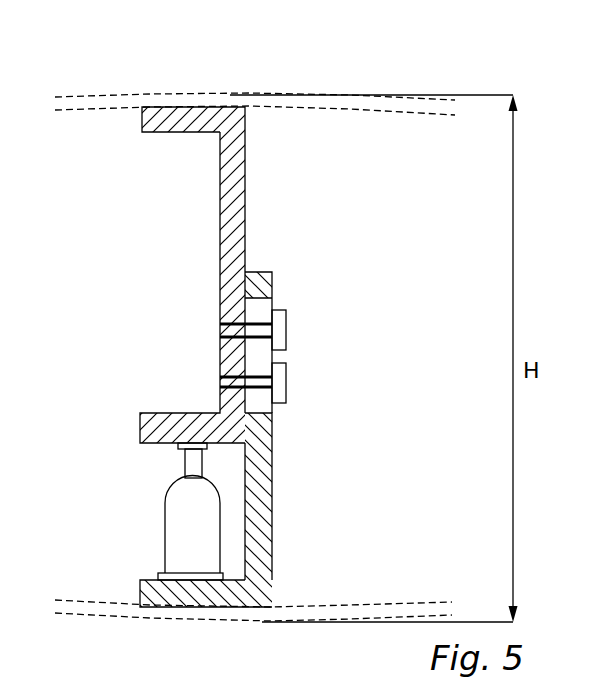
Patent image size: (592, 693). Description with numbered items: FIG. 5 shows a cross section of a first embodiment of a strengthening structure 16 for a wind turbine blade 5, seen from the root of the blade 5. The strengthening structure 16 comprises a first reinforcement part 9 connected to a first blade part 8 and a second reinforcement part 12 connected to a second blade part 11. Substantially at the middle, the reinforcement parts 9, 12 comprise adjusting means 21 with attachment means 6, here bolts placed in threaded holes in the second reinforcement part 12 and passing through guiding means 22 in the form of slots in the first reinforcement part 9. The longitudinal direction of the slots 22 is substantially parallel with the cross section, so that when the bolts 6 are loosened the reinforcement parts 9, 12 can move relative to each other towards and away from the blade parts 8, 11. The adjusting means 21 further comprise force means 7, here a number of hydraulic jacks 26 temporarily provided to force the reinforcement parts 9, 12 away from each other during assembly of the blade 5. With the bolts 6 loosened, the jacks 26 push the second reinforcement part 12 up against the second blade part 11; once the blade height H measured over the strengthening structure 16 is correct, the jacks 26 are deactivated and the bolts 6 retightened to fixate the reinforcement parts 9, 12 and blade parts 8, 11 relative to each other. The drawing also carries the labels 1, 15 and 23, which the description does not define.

The wind turbine 1 is at (584, 683).
The wind turbine blade 5 is at (234, 78).
The attachment means 6 is at (282, 330).
The force means 7 is at (160, 511).
The first blade part 8 is at (82, 605).
The first reinforcement part 9 is at (273, 512).
The second blade part 11 is at (329, 97).
The second reinforcement part 12 is at (248, 212).
The flange 15 is at (183, 107).
The strengthening structure 16 is at (405, 299).
The adjusting means 21 is at (160, 317).
The guiding means 22 is at (262, 313).
The bolt 23 is at (282, 380).
The hydraulic jacks 26 is at (188, 528).